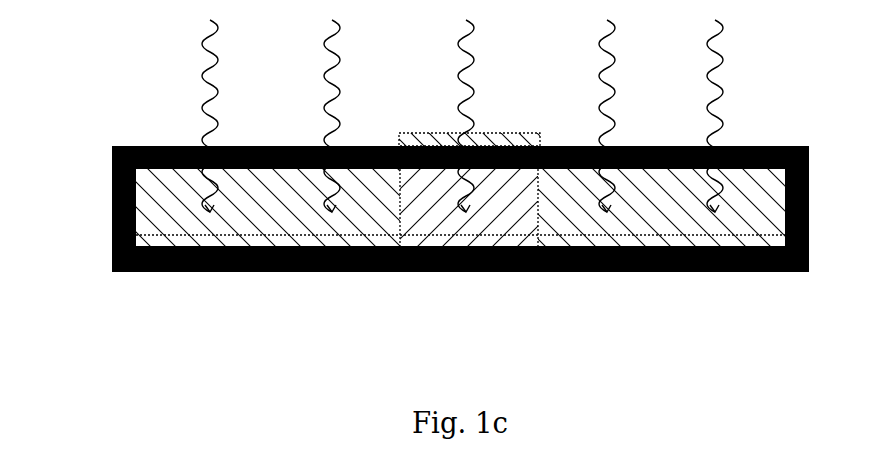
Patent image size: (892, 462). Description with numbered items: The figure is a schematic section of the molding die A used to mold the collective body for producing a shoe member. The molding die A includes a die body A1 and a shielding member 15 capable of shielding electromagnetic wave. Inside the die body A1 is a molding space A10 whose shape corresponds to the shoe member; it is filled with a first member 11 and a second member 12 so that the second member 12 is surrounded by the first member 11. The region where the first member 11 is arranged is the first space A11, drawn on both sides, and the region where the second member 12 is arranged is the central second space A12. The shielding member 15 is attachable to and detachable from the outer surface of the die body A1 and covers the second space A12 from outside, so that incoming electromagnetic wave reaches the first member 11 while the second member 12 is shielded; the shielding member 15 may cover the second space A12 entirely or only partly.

The molding die A is at (459, 189).
The die body A1 is at (112, 190).
The molding space A10 is at (459, 259).
The first space A11 is at (318, 272).
The second space A12 is at (570, 312).
The first member 11 is at (268, 145).
The second member 12 is at (424, 133).
The shielding member 15 is at (505, 132).